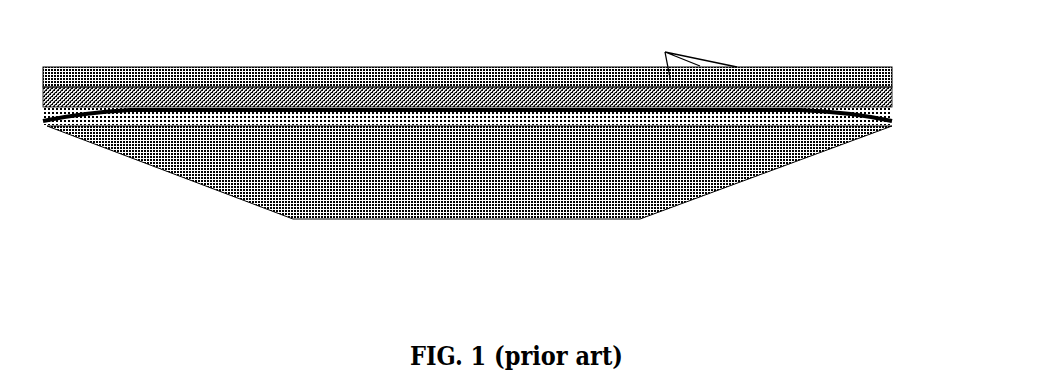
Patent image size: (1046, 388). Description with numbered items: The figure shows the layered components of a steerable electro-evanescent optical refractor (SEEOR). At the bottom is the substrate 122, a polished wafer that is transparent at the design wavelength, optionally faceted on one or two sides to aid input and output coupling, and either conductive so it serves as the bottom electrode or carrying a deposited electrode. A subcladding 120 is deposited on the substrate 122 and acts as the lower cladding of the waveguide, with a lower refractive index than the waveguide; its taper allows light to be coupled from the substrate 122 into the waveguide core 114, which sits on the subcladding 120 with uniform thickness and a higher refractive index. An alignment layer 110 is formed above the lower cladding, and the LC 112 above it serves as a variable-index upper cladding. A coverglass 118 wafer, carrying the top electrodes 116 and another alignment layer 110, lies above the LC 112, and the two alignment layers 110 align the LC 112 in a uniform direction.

The alignment layer 110 is at (363, 107).
The LC 112 is at (503, 96).
The waveguide core 114 is at (567, 108).
The top electrodes 116 is at (693, 50).
The coverglass 118 is at (822, 68).
The subcladding 120 is at (727, 121).
The substrate 122 is at (357, 187).